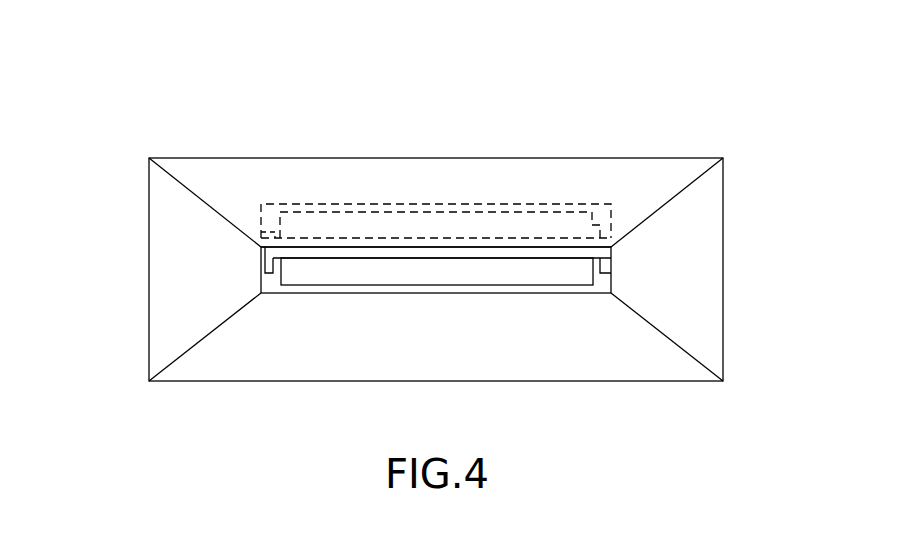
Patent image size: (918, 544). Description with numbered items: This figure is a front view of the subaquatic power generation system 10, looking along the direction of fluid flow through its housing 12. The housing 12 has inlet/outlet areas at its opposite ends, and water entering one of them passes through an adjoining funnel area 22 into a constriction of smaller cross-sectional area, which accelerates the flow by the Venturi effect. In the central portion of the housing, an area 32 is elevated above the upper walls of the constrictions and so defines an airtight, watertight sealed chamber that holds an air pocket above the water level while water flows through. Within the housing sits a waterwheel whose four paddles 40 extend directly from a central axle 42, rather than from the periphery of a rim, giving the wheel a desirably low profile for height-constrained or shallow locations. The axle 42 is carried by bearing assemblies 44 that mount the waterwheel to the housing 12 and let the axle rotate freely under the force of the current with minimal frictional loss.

The subaquatic power generation system 10 is at (707, 133).
The housing 12 is at (149, 229).
The funnel area 22 is at (165, 289).
The elevated area 32 is at (291, 204).
The paddle 40 is at (348, 222).
The central axle 42 is at (530, 253).
The bearing assembly 44 is at (604, 258).